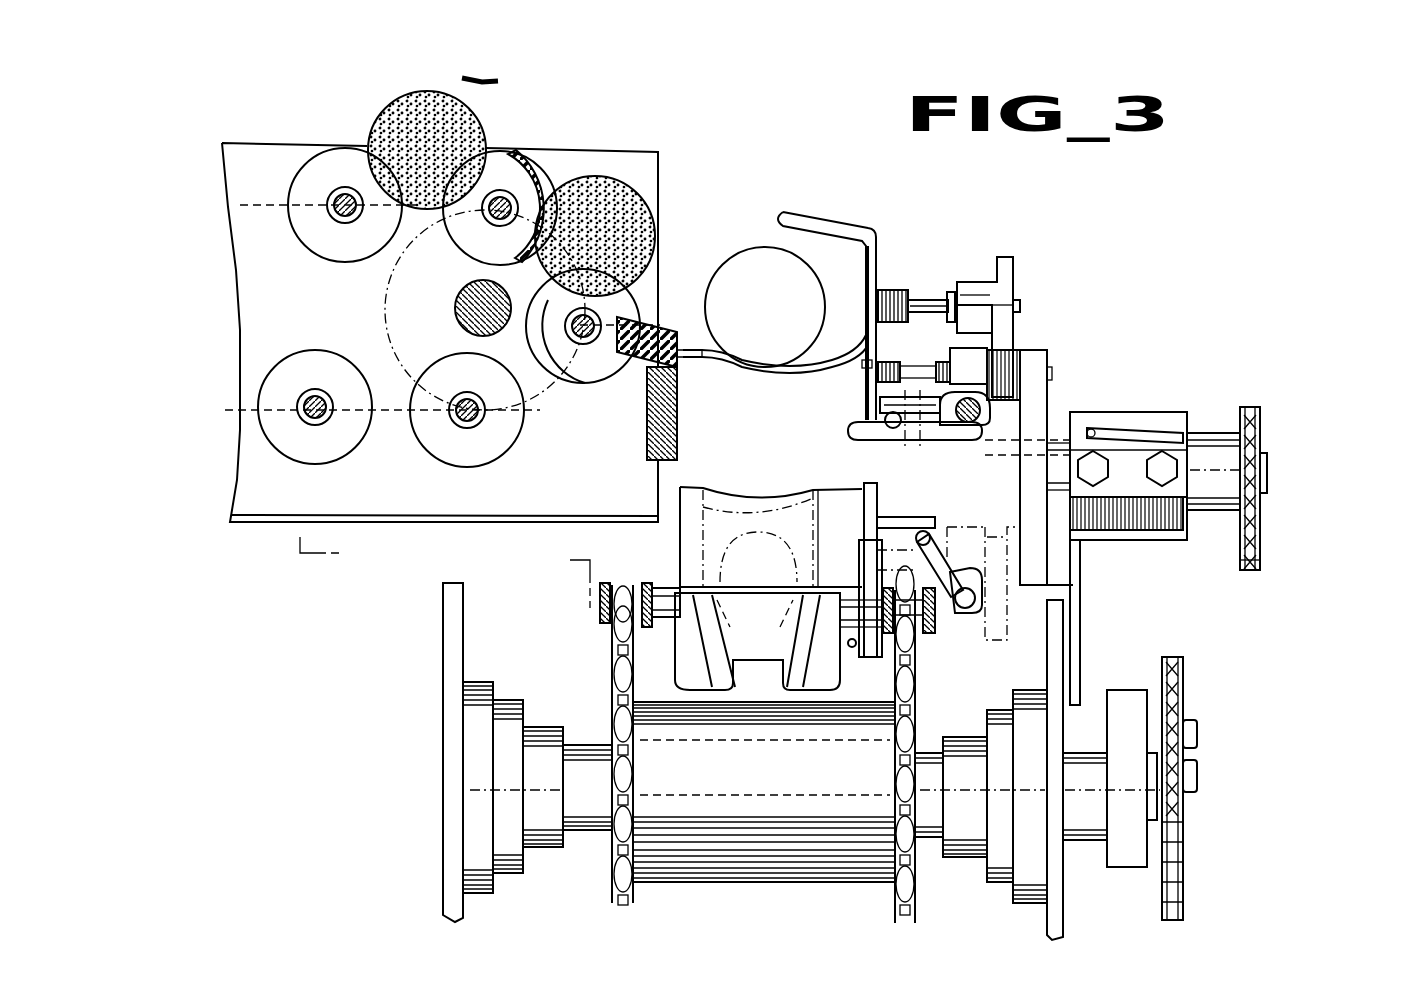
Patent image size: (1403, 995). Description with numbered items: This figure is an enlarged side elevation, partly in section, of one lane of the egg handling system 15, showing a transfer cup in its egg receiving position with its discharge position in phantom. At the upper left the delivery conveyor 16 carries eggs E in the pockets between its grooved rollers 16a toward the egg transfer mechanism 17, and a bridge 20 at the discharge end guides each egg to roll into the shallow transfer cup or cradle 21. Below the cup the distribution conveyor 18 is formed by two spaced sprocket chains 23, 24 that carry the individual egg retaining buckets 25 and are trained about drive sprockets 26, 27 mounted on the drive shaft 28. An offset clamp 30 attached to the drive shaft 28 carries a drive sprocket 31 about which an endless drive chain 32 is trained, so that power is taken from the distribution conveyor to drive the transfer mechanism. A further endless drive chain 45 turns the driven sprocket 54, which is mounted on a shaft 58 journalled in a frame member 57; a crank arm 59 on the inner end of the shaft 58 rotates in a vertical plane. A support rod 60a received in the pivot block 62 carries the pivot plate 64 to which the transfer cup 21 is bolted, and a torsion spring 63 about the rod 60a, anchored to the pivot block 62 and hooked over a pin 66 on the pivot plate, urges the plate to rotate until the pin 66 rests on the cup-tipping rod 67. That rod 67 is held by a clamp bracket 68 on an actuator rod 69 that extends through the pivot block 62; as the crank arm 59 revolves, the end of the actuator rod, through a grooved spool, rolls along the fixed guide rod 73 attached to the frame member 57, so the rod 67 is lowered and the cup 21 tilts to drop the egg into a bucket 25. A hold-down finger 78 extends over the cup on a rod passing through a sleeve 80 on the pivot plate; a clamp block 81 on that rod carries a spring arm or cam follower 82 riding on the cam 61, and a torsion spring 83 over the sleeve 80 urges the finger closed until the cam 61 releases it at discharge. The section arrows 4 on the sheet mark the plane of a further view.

The section line 4- 4 is at (310, 95).
The egg handling system 15 is at (1140, 205).
The delivery conveyor 16 is at (275, 184).
The grooved rollers 16a is at (455, 232).
The eggs E is at (475, 124).
The egg transfer mechanism 17 is at (893, 205).
The distribution conveyor 18 is at (648, 564).
The bridge 20 is at (643, 365).
The transfer cup 21 is at (740, 372).
The sprocket chain 23 is at (600, 620).
The sprocket chain 24 is at (932, 633).
The egg retaining buckets 25 is at (757, 660).
The drive sprocket 26 is at (616, 660).
The drive sprocket 27 is at (908, 683).
The drive shaft 28 is at (582, 763).
The offset clamp 30 is at (1142, 733).
The drive sprocket 31 is at (1185, 700).
The endless drive chain 32 is at (1185, 832).
The endless drive chain 45 is at (1262, 540).
The driven sprocket 54 is at (1262, 427).
The frame member 57 is at (1122, 420).
The shaft 58 is at (1268, 467).
The crank arm 59 is at (1050, 357).
The support rod 60a is at (933, 365).
The cam 61 is at (1019, 313).
The pivot block 62 is at (983, 380).
The torsion spring 63 is at (868, 375).
The pivot plate 64 is at (866, 394).
The pin 66 is at (880, 405).
The cup-tipping rod 67 is at (888, 427).
The clamp bracket 68 is at (940, 428).
The actuator rod 69 is at (968, 423).
The guide rod 73 is at (848, 433).
The hold-down finger 78 is at (783, 217).
The sleeve 80 is at (925, 298).
The clamp block 81 is at (980, 327).
The spring arm 82 is at (1013, 265).
The torsion spring 83 is at (888, 289).